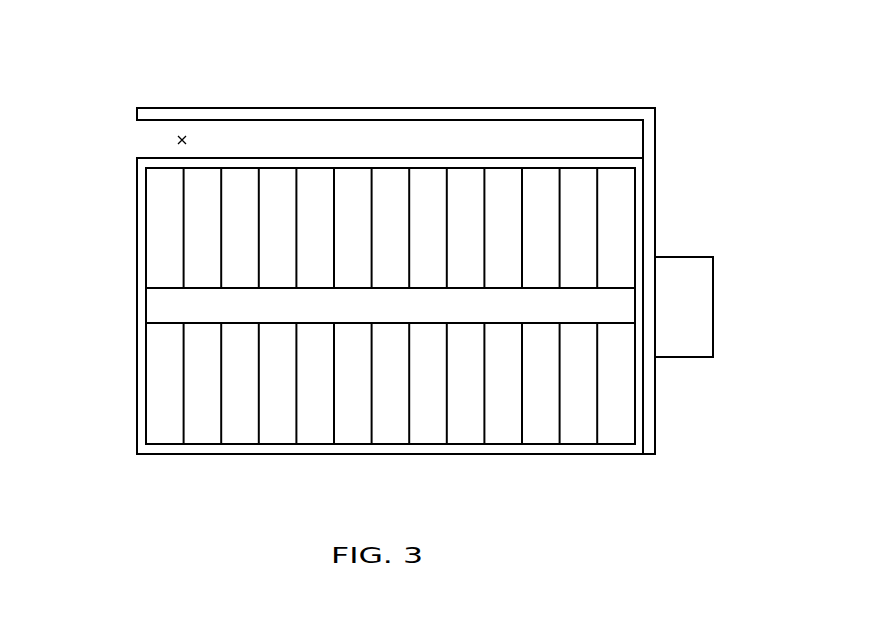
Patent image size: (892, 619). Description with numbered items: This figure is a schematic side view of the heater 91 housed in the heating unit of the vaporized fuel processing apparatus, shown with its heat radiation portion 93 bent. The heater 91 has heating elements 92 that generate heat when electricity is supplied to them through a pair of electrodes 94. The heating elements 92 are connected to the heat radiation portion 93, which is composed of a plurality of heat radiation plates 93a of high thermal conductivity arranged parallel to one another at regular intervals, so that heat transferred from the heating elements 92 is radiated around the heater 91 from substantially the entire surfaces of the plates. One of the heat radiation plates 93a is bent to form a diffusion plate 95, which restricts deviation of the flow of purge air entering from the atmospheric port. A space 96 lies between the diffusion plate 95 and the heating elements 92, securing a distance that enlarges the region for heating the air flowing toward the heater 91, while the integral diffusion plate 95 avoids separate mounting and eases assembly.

The heater 91 is at (676, 87).
The heating elements 92 is at (150, 162).
The heat radiation portion 93 is at (162, 244).
The heat radiation plates 93a is at (165, 413).
The electrodes 94 is at (683, 299).
The diffusion plate 95 is at (228, 116).
The space 96 is at (175, 140).